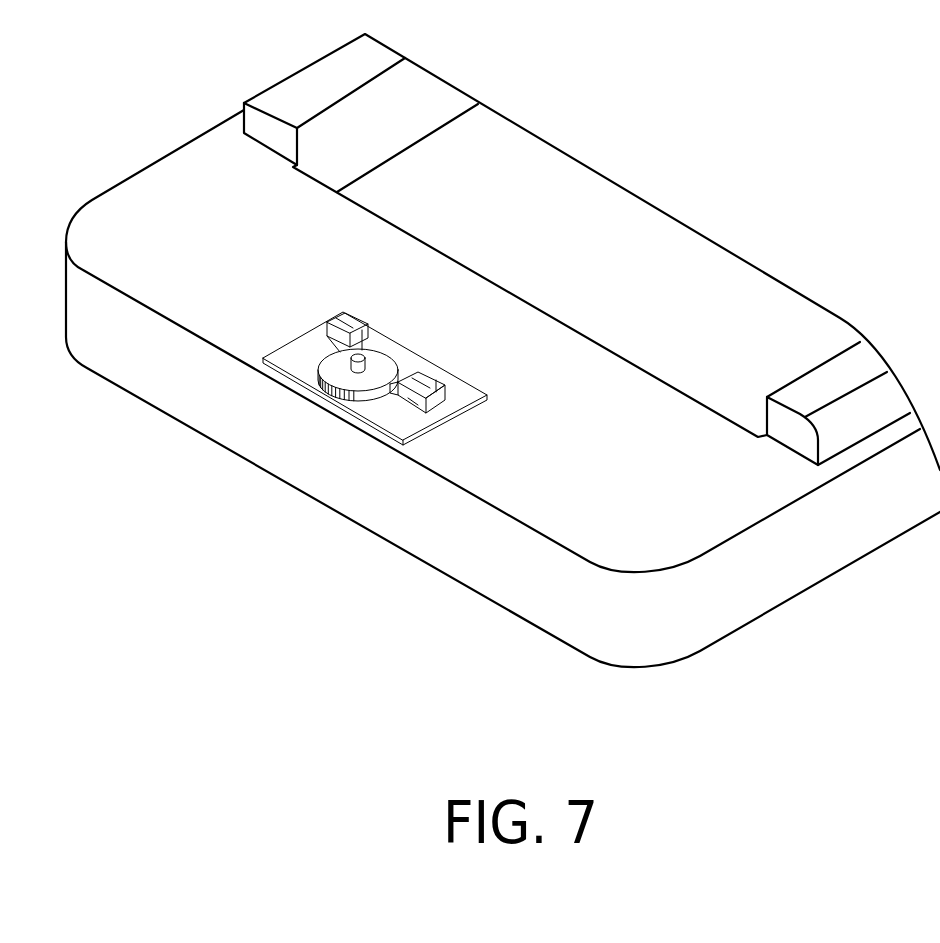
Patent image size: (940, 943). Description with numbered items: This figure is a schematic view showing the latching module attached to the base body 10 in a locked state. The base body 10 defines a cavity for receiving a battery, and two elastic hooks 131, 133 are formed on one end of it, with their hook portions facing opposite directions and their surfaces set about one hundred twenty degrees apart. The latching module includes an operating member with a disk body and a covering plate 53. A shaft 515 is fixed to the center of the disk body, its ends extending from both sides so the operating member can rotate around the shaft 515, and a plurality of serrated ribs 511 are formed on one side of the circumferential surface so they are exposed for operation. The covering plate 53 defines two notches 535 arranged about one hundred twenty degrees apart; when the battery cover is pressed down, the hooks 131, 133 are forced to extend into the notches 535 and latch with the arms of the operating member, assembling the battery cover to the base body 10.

The base body 10 is at (768, 565).
The covering plate 53 is at (447, 418).
The serrated ribs 511 is at (327, 395).
The shaft 515 is at (358, 362).
The elastic hook 131 is at (362, 343).
The elastic hook 133 is at (415, 403).
The notches 535 is at (433, 397).